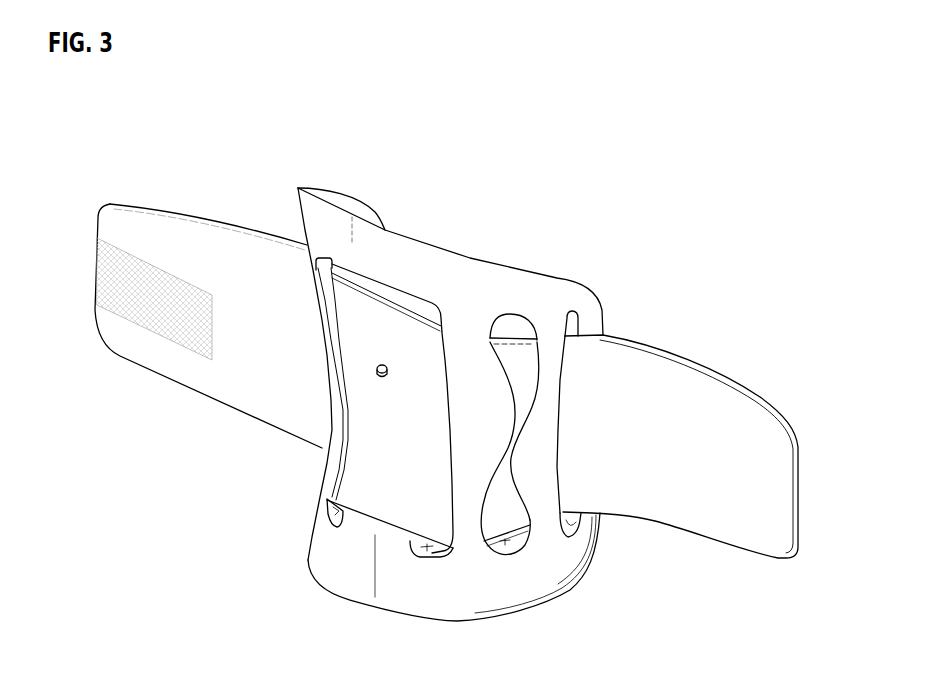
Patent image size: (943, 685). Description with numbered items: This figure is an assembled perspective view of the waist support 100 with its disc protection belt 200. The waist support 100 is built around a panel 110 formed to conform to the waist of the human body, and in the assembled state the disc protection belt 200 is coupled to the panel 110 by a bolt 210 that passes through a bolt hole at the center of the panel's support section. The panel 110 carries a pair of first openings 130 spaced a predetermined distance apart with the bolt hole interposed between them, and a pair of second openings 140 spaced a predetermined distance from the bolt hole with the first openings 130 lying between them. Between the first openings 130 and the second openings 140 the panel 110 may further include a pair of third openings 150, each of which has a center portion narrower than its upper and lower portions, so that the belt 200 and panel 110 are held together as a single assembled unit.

The waist support 100 is at (471, 406).
The panel 110 is at (494, 292).
The first openings 130 is at (427, 553).
The second openings 140 is at (582, 563).
The third openings 150 is at (506, 544).
The disc protection belt 200 is at (182, 402).
The bolt 210 is at (372, 371).